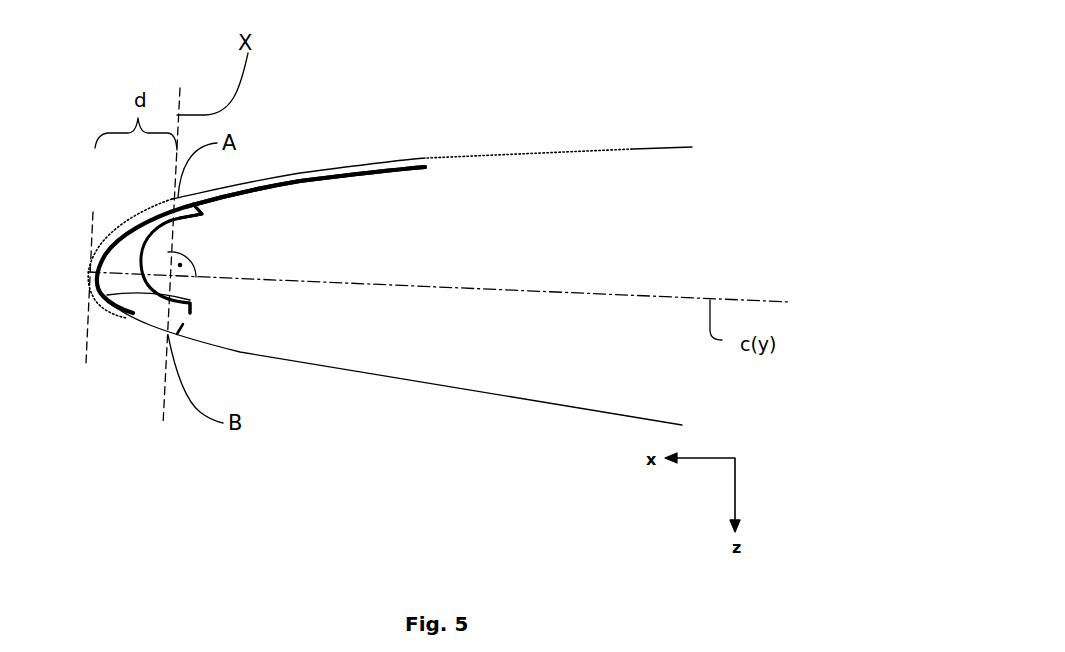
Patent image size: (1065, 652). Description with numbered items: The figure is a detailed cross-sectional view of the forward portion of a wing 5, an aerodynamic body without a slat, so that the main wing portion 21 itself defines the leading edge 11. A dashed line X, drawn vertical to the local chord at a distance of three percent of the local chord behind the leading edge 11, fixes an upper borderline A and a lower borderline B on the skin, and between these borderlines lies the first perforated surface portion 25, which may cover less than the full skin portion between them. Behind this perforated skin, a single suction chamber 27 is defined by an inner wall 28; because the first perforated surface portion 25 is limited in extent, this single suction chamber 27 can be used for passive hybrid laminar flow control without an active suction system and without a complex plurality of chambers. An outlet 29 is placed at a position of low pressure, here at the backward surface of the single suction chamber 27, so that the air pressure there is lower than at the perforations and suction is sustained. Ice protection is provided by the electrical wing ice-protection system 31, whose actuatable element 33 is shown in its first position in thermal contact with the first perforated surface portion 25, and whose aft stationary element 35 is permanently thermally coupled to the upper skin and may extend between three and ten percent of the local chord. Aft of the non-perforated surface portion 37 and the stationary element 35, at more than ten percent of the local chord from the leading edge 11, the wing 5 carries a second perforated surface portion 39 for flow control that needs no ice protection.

The wing 5 is at (634, 95).
The leading edge 11 is at (80, 276).
The main wing portion 21 is at (580, 385).
The first perforated surface portion 25 is at (107, 237).
The single suction chamber 27 is at (148, 308).
The inner wall 28 is at (183, 223).
The outlet 29 is at (188, 320).
The electrical wing ice-protection system (eWIPS) 31 is at (224, 206).
The actuatable element 33 is at (190, 300).
The stationary element 35 is at (306, 178).
The non-perforated surface portion 37 is at (308, 160).
The second perforated surface portion 39 is at (467, 153).